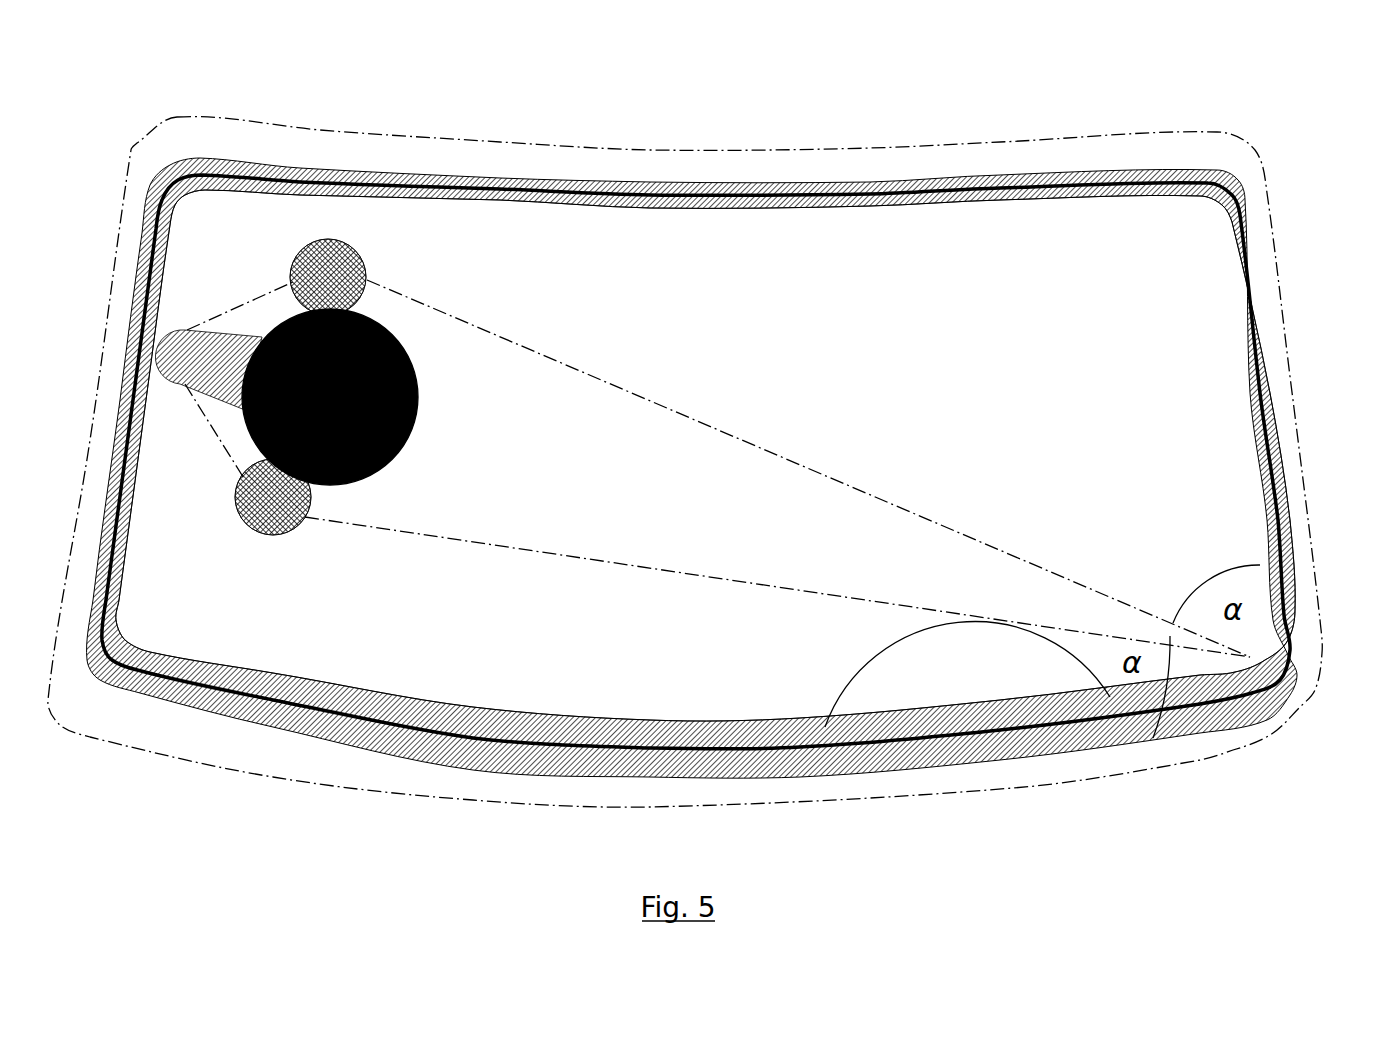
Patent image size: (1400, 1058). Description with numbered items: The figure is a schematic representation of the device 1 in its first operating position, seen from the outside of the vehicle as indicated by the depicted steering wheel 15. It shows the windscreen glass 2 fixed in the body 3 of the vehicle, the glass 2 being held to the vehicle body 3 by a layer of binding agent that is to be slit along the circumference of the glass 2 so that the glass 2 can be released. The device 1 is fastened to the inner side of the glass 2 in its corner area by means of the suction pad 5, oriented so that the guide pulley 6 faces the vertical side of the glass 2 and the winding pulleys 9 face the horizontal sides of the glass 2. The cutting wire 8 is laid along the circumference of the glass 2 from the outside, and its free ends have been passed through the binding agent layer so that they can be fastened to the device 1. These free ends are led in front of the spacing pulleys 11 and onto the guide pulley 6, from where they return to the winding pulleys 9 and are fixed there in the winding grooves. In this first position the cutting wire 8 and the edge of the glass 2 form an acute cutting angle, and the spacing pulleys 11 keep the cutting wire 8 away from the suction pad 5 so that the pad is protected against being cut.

The device 1 is at (359, 422).
The glass 2 is at (1192, 285).
The body 3 is at (1227, 177).
The suction pad 5 is at (431, 428).
The guide pulley 6 is at (173, 330).
The cutting wire 8 is at (1290, 353).
The winding pulleys 9 is at (362, 257).
The spacing pulleys 11 is at (303, 247).
The steering wheel 15 is at (847, 683).